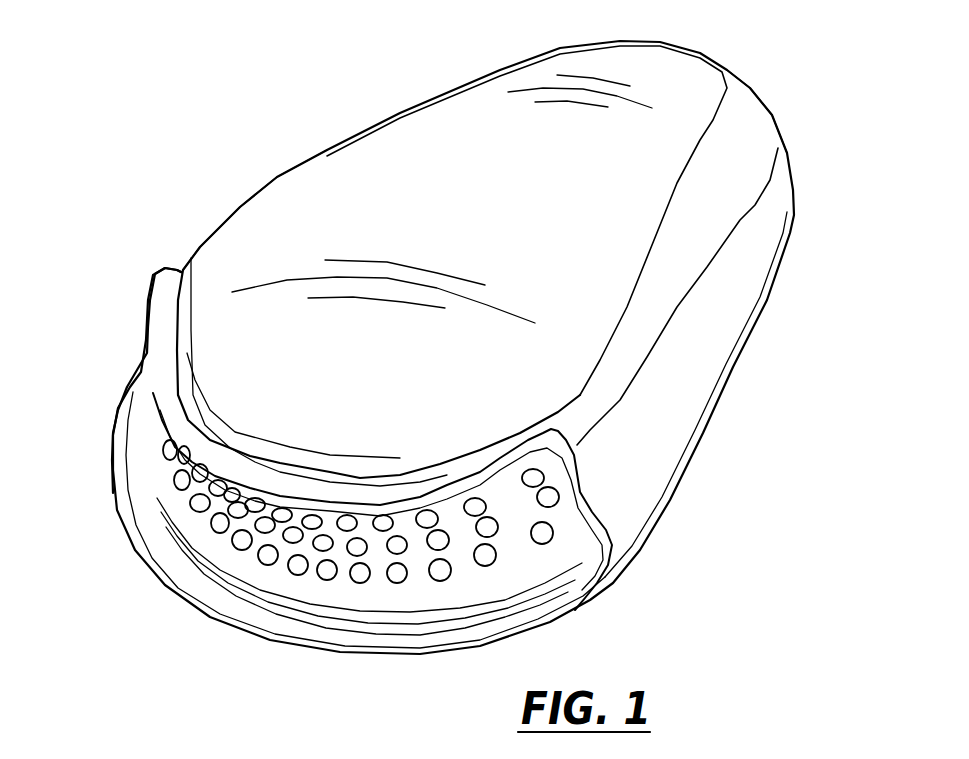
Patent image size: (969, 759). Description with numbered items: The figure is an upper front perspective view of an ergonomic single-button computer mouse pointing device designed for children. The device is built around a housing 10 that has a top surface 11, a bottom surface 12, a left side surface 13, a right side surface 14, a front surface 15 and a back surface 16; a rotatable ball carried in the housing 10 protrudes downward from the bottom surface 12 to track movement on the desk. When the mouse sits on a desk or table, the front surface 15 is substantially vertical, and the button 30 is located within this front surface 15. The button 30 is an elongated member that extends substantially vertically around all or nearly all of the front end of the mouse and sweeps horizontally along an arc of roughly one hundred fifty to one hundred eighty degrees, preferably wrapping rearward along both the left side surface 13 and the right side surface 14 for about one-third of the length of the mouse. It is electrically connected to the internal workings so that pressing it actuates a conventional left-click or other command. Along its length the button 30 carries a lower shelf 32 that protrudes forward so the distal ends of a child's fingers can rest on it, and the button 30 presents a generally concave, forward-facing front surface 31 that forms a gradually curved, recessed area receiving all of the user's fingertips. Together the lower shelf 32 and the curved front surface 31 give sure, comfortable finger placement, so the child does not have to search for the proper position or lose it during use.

The housing 10 is at (335, 106).
The top surface 11 is at (513, 218).
The bottom surface 12 is at (613, 583).
The left side surface 13 is at (697, 392).
The right side surface 14 is at (282, 178).
The front surface 15 is at (168, 467).
The back surface 16 is at (762, 100).
The button 30 is at (361, 573).
The front surface of button 31 is at (343, 560).
The lower shelf 32 is at (207, 594).